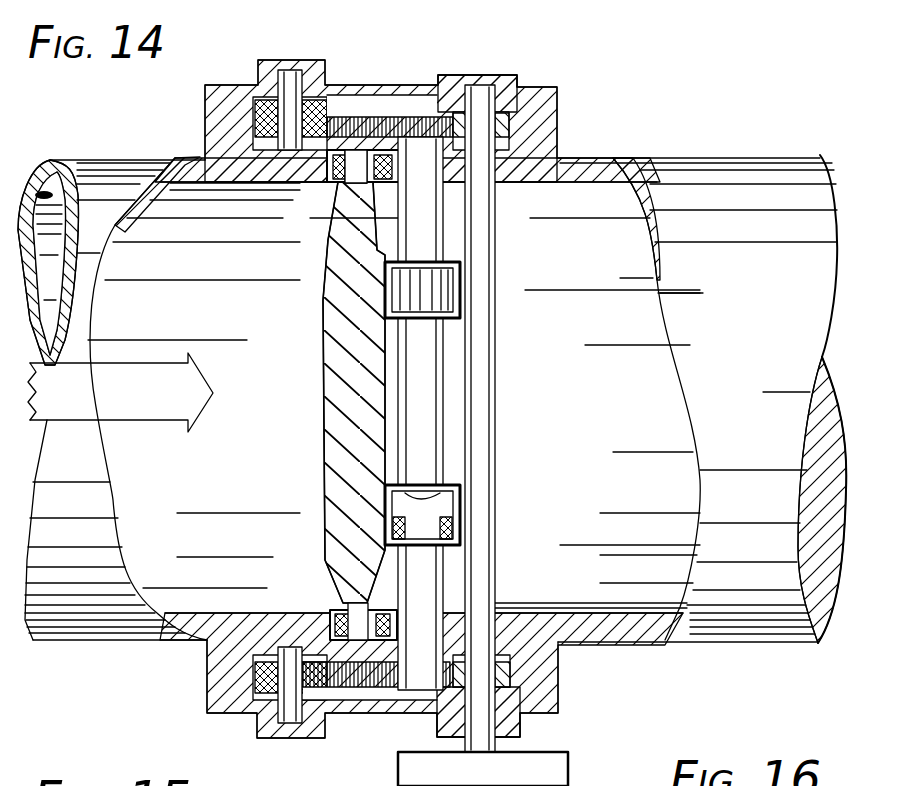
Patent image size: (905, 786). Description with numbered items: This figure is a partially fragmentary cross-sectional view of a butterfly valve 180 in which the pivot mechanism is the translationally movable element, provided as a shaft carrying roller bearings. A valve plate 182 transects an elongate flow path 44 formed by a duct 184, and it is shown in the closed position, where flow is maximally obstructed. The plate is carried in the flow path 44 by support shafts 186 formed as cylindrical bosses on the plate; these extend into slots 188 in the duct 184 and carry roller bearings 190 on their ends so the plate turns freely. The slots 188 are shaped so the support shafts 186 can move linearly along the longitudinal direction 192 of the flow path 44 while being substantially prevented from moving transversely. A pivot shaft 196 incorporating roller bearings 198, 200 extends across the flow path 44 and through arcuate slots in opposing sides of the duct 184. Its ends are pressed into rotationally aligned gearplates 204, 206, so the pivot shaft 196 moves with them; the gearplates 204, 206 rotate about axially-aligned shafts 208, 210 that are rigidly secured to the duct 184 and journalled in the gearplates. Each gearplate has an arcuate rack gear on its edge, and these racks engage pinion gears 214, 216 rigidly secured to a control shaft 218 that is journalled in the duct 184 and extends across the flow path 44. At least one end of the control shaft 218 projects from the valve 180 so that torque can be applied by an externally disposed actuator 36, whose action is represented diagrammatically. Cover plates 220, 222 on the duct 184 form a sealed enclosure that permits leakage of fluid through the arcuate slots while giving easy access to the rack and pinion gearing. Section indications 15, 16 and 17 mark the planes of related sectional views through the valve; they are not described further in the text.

The section line 15- 15 is at (228, 265).
The section line 16- 16 is at (228, 114).
The section line 17- 17 is at (297, 163).
The actuator 36 is at (553, 743).
The flow path 44 is at (222, 491).
The valve 180 is at (658, 90).
The valve plate 182 is at (325, 438).
The duct 184 is at (591, 168).
The support shaft 186 is at (340, 587).
The slot 188 is at (392, 157).
The roller bearing 190 is at (330, 630).
The longitudinal direction 192 is at (147, 363).
The pivot shaft 196 is at (446, 439).
The roller bearing 198 is at (460, 283).
The roller bearing 200 is at (460, 522).
The gearplate 204 is at (360, 117).
The gearplate 206 is at (363, 688).
The shaft 208 is at (273, 62).
The shaft 210 is at (293, 648).
The pinion gear 214 is at (503, 122).
The pinion gear 216 is at (503, 672).
The control shaft 218 is at (496, 392).
The cover plate 220 is at (433, 82).
The cover plate 222 is at (232, 713).